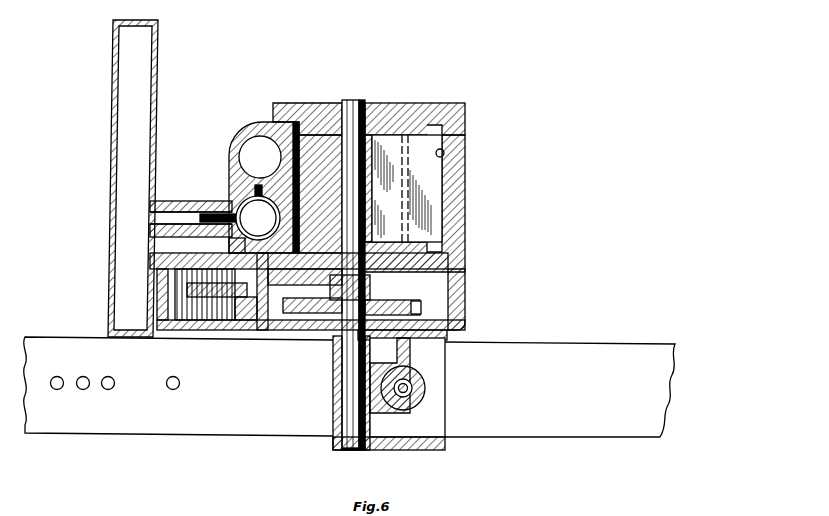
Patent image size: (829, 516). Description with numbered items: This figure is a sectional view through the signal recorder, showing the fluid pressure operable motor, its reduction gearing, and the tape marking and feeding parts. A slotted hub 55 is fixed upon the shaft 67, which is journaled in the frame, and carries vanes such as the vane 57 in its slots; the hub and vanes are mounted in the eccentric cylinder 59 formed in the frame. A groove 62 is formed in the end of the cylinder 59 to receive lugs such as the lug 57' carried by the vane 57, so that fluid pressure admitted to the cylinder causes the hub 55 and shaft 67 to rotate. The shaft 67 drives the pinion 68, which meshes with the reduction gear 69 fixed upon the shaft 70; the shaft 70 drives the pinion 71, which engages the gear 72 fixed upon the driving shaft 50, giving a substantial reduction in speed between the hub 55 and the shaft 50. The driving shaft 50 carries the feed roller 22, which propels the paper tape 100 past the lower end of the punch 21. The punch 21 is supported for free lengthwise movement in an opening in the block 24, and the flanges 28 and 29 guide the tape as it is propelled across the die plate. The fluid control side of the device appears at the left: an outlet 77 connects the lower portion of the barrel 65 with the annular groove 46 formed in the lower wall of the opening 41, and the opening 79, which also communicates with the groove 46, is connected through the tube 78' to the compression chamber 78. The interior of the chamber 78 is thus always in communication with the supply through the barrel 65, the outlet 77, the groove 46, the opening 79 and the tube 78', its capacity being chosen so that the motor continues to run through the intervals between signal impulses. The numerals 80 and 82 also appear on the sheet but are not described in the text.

The tape 100 is at (588, 344).
The compression chamber 78 is at (147, 178).
The tube 78' is at (191, 206).
The opening 79 is at (232, 210).
The barrel 65 is at (252, 128).
The opening 41 is at (240, 240).
The outlet 77 is at (259, 187).
The annular groove 46 is at (258, 218).
The groove 62 is at (297, 124).
The slotted hub 55 is at (330, 130).
The shaft 67 is at (357, 103).
The lug 57' is at (434, 176).
The vane 57 is at (431, 188).
The eccentric cylinder 59 is at (445, 153).
The reduction gear 69 is at (196, 265).
The shaft 70 is at (262, 330).
The pinion 71 is at (240, 300).
The pinion 68 is at (372, 287).
The gear 72 is at (403, 303).
The flange 28 is at (447, 337).
The feed roller 22 is at (333, 418).
The block 24 is at (415, 385).
The punch 21 is at (403, 397).
The flange 29 is at (446, 445).
The driving shaft 50 is at (350, 452).
The element 80 is at (221, 508).
The element 82 is at (598, 509).